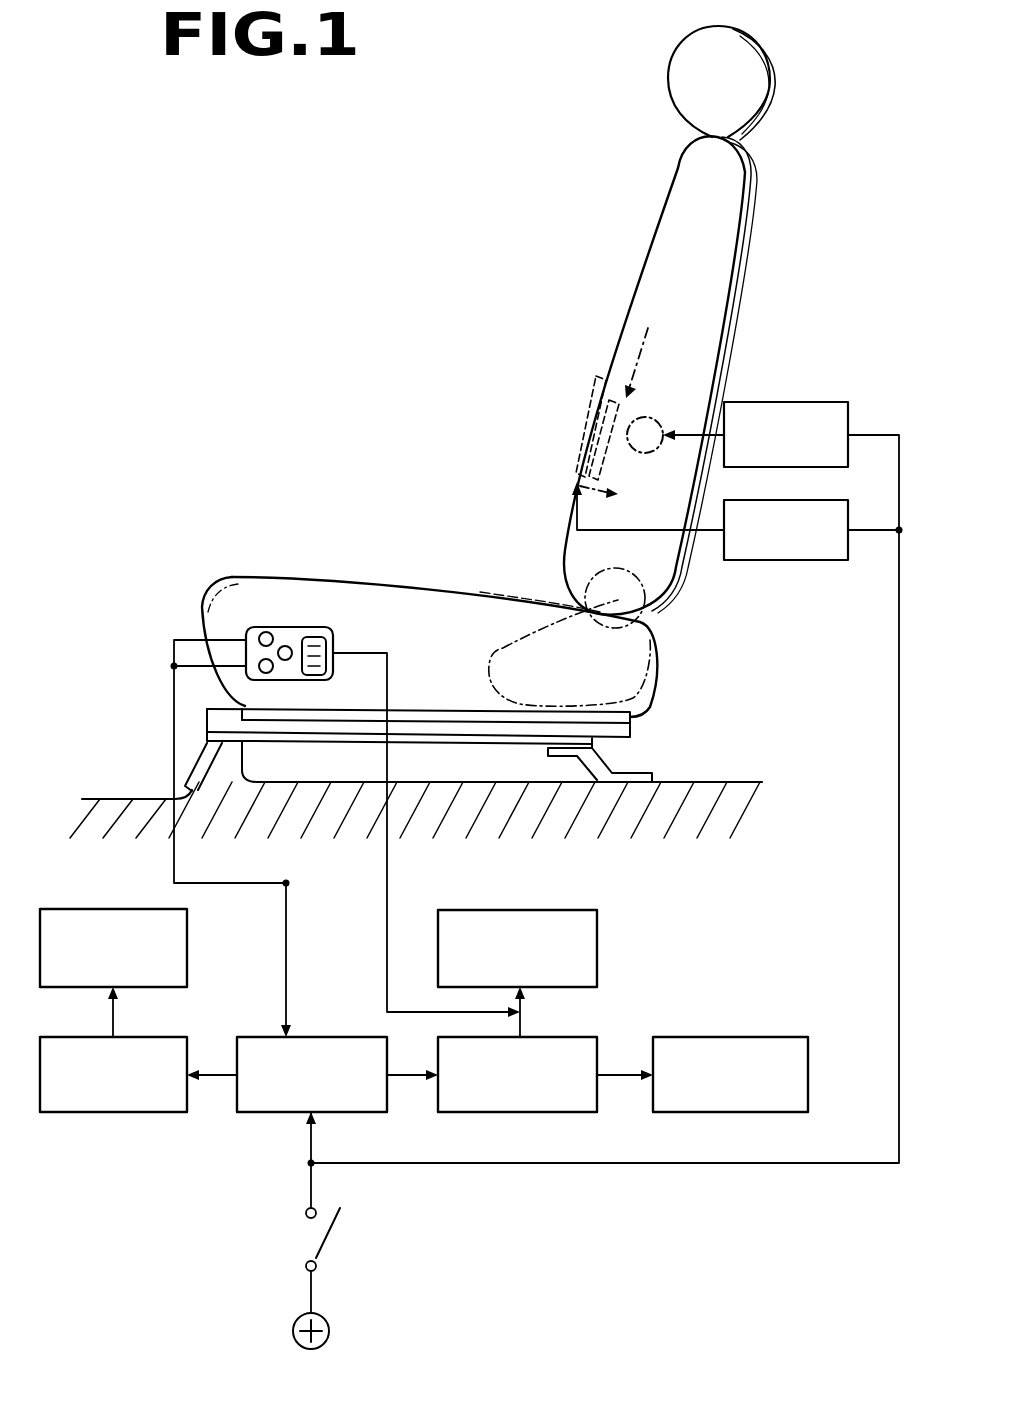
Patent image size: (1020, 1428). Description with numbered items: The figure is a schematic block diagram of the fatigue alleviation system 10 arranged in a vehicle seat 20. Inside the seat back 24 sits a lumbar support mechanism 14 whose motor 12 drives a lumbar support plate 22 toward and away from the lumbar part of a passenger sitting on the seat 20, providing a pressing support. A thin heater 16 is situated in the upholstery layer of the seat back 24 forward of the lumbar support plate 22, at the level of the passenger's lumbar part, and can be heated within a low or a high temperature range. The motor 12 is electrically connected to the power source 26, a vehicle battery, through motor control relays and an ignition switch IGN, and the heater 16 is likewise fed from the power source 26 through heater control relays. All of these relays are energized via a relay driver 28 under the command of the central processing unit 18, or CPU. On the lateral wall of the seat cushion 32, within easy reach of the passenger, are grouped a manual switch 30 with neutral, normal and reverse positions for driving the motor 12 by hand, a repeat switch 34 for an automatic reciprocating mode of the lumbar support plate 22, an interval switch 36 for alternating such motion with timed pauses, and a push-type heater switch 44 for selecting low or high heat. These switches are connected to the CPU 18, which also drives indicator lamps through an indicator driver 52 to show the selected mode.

The vehicle seat system 10 is at (290, 282).
The motor 12 is at (660, 416).
The lumbar support mechanism 14 is at (650, 344).
The heater 16 is at (602, 390).
The central processing unit 18 is at (250, 1113).
The seat 20 is at (364, 510).
The lumbar support plate 22 is at (606, 434).
The seat back 24 is at (677, 222).
The power source 26 is at (330, 1330).
The relay driver 28 is at (470, 1113).
The manual switch 30 is at (335, 640).
The seat cushion 32 is at (243, 588).
The repeat switch 34 is at (267, 632).
The interval switch 36 is at (260, 672).
The heater switch 44 is at (290, 647).
The indicator driver 52 is at (120, 1113).
The ignition switch IGN is at (328, 1240).